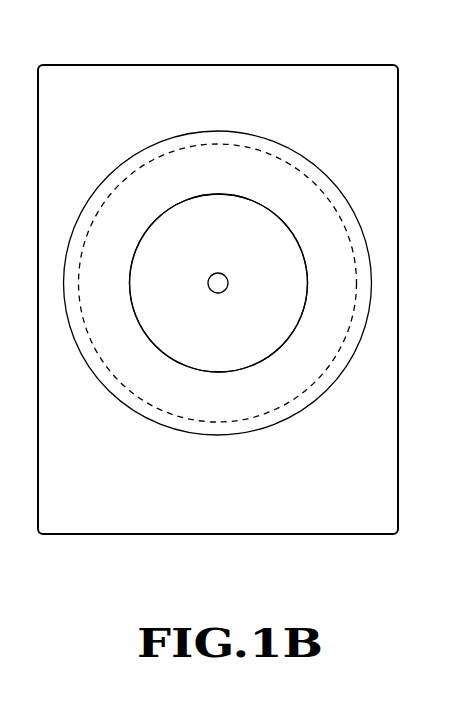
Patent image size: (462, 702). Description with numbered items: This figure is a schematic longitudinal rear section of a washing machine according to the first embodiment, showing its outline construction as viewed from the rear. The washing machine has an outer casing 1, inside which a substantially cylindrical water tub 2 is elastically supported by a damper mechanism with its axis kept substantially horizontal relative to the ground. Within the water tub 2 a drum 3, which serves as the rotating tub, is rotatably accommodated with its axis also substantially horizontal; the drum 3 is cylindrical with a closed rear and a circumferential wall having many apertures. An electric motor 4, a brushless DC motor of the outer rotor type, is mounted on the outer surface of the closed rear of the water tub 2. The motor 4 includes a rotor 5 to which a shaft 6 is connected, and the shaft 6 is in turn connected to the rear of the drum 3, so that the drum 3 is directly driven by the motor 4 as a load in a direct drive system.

The outer casing 1 is at (250, 65).
The water tub 2 is at (185, 133).
The drum 3 is at (352, 210).
The electric motor 4 is at (312, 274).
The rotor 5 is at (295, 308).
The shaft 6 is at (223, 291).